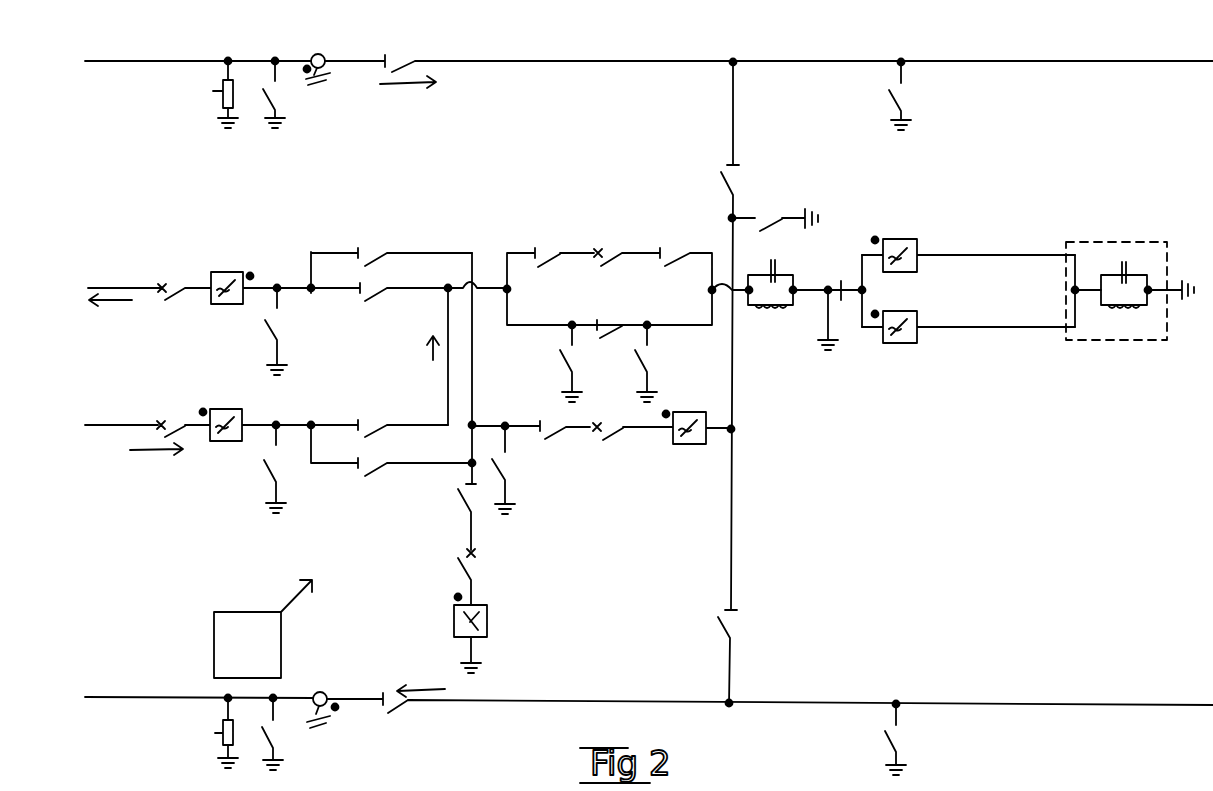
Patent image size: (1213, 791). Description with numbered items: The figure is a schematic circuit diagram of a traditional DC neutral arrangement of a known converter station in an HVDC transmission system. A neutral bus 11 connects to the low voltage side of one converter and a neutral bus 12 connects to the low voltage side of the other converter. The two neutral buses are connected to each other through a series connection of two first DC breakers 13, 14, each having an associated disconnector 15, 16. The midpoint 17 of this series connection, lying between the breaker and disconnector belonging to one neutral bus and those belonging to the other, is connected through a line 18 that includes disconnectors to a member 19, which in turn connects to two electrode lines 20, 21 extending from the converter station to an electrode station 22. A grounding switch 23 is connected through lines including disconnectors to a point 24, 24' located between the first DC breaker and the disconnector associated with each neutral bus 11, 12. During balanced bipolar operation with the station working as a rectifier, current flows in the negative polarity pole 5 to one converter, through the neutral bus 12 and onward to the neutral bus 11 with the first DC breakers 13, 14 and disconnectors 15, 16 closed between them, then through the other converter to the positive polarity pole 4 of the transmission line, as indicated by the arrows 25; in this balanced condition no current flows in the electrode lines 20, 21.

The pole 4 is at (505, 62).
The negative polarity pole 5 is at (545, 700).
The neutral bus 11 is at (118, 288).
The neutral bus 12 is at (113, 425).
The first DC breaker 13 is at (178, 300).
The first DC breaker 14 is at (173, 420).
The disconnector 15 is at (375, 300).
The disconnector 16 is at (370, 422).
The midpoint 17 is at (452, 285).
The line 18 is at (577, 250).
The member 19 is at (842, 283).
The electrode line 20 is at (962, 250).
The electrode line 21 is at (973, 328).
The electrode station 22 is at (1117, 340).
The grounding switch 23 is at (476, 568).
The point 24 is at (332, 293).
The point 24' is at (331, 422).
The arrows 25 is at (400, 85).